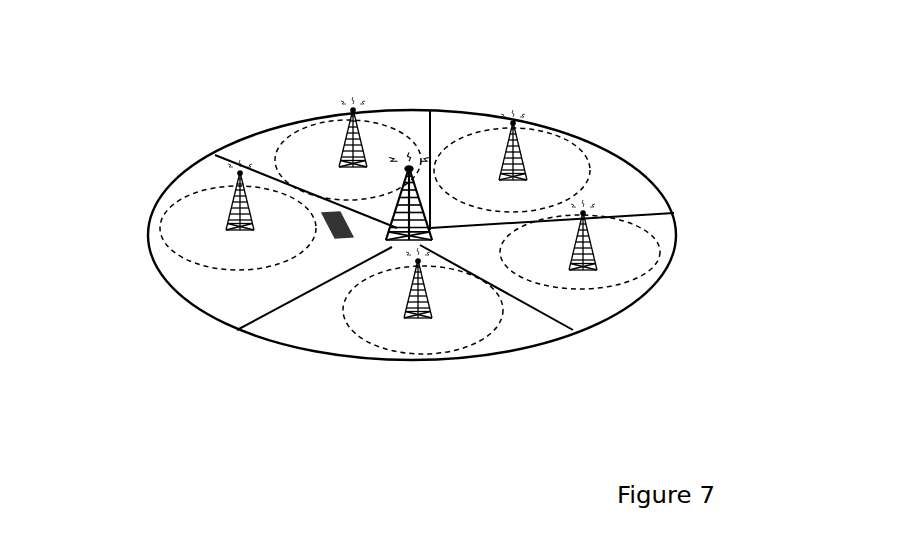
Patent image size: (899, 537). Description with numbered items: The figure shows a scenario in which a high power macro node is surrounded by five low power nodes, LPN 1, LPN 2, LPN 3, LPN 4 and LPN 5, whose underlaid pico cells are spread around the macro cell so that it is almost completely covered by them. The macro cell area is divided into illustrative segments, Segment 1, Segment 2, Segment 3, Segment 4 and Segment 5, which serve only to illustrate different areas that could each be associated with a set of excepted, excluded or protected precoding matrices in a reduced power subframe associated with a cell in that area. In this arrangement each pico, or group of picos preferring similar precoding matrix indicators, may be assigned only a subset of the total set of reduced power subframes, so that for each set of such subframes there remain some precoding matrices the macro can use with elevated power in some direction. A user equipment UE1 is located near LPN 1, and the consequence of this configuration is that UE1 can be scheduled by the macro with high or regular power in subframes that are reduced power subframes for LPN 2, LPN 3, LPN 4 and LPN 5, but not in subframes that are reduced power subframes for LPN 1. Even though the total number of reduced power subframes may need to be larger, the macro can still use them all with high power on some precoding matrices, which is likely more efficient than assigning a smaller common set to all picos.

The low power node LPN 1 is at (213, 228).
The low power node LPN 2 is at (420, 322).
The low power node LPN 3 is at (583, 275).
The low power node LPN 4 is at (530, 170).
The low power node LPN 5 is at (380, 130).
The segment Segment 1 is at (217, 283).
The segment Segment 2 is at (298, 330).
The segment Segment 3 is at (600, 325).
The segment Segment 4 is at (637, 193).
The segment Segment 5 is at (263, 142).
The user equipment UE1 is at (344, 242).